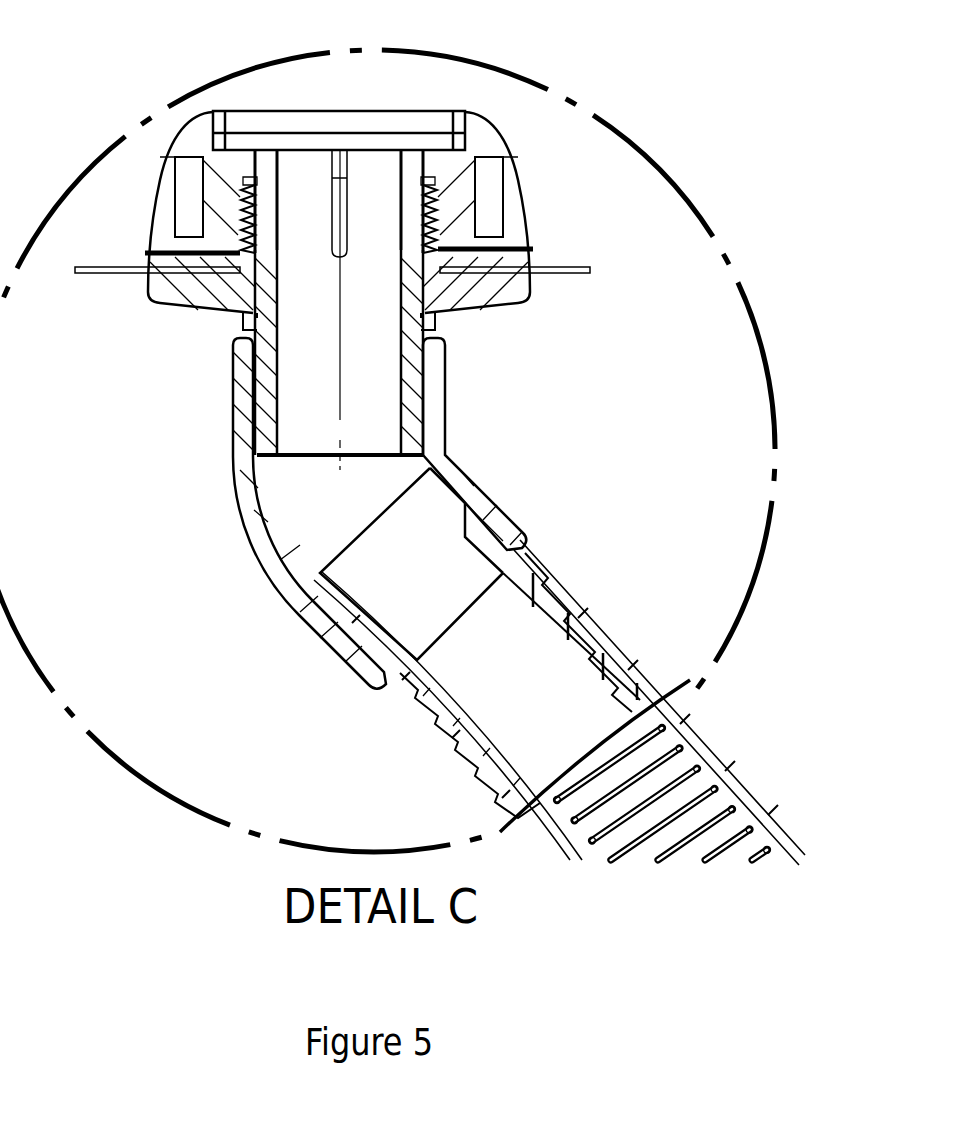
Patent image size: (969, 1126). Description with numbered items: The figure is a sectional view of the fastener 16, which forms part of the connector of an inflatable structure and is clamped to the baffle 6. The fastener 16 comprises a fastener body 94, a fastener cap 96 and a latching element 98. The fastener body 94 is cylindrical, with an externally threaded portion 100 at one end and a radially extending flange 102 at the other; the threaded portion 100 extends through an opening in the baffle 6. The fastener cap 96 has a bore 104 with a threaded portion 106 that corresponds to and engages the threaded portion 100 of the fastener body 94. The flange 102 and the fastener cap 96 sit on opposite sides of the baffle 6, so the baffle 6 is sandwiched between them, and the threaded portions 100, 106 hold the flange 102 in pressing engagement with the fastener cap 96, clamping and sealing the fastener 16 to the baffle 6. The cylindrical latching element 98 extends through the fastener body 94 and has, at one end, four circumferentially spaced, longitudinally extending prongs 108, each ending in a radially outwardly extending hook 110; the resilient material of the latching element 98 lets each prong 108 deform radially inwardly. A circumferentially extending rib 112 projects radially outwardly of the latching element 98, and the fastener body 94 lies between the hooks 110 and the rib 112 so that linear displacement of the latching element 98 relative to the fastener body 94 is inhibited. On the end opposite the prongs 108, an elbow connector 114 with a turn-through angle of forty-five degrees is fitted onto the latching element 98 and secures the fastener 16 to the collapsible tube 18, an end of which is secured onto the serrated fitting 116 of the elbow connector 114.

The baffle 6 is at (565, 272).
The fastener 16 is at (502, 403).
The collapsible tube 18 is at (588, 603).
The fastener body 94 is at (210, 298).
The fastener cap 96 is at (484, 216).
The latching element 98 is at (265, 430).
The externally threaded portion 100 is at (425, 210).
The radially extending flange 102 is at (485, 300).
The bore 104 is at (240, 200).
The threaded portion 106 is at (240, 215).
The prongs 108 is at (272, 185).
The hook 110 is at (238, 185).
The rib 112 is at (236, 330).
The elbow connector 114 is at (250, 520).
The serrated fitting 116 is at (415, 707).